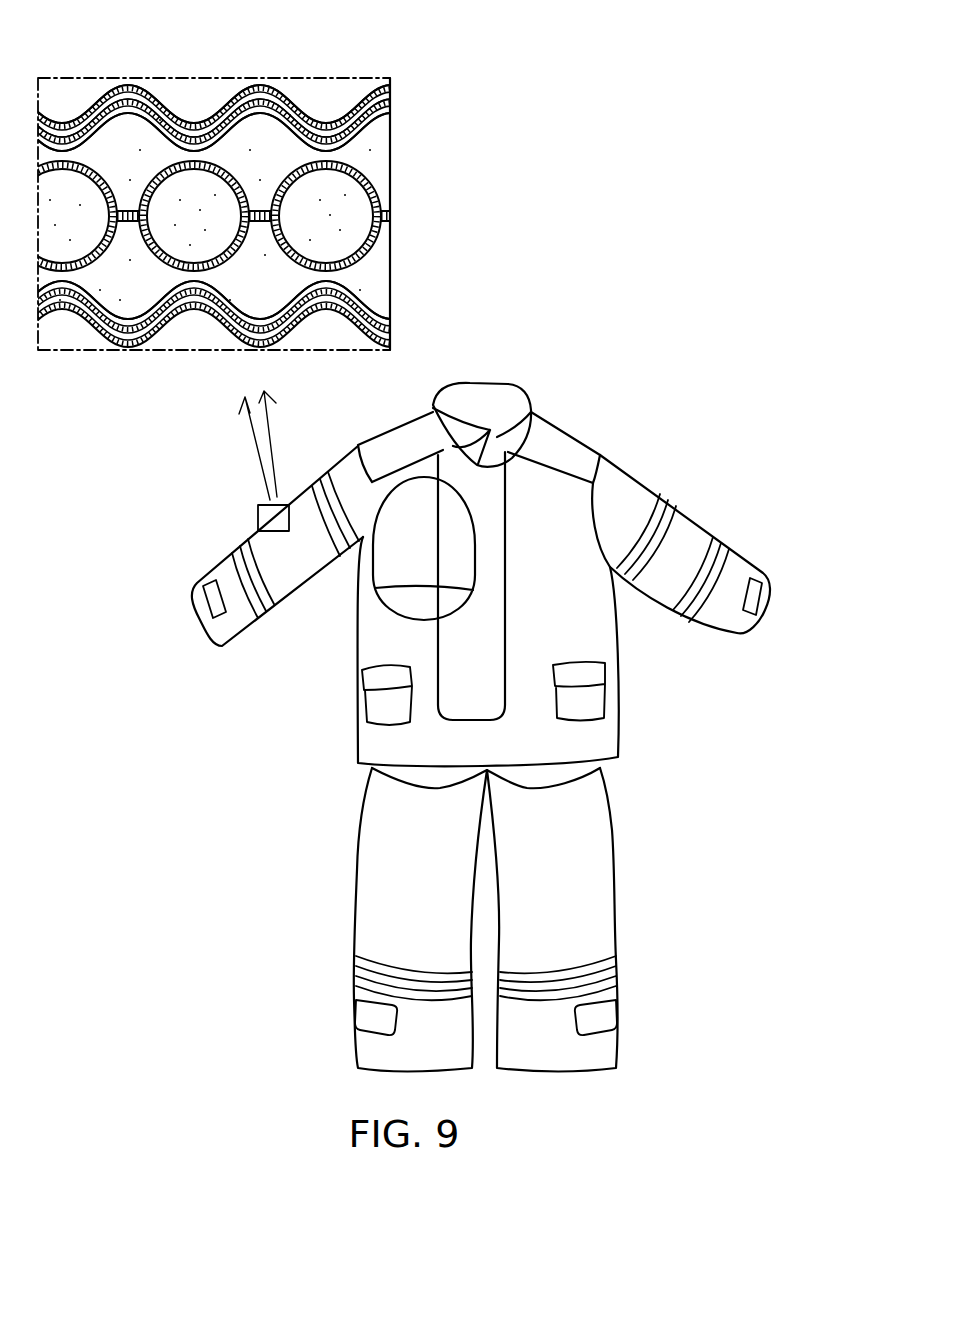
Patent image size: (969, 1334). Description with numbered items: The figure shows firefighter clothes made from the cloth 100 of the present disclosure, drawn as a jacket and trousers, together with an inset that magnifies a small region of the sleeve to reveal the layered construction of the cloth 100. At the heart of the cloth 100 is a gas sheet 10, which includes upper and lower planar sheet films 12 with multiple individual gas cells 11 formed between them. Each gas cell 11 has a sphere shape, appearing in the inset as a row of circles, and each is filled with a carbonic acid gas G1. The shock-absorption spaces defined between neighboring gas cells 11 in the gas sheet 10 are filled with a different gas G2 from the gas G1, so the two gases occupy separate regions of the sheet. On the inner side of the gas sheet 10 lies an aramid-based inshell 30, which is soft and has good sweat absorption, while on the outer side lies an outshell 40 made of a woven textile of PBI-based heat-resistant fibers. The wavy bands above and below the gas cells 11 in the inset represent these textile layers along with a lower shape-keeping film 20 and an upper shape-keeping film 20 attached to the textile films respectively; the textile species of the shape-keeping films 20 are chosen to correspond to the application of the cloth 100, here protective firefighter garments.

The gas sheet 10 is at (280, 100).
The gas cell 11 is at (223, 170).
The planar sheet film 12 is at (153, 90).
The shape-keeping film 20 is at (107, 83).
The aramid-based inshell 30 is at (373, 92).
The outshell 40 is at (235, 330).
The carbonic acid gas G1 is at (357, 193).
The different gas G2 is at (128, 303).
The cloth 100 is at (620, 460).